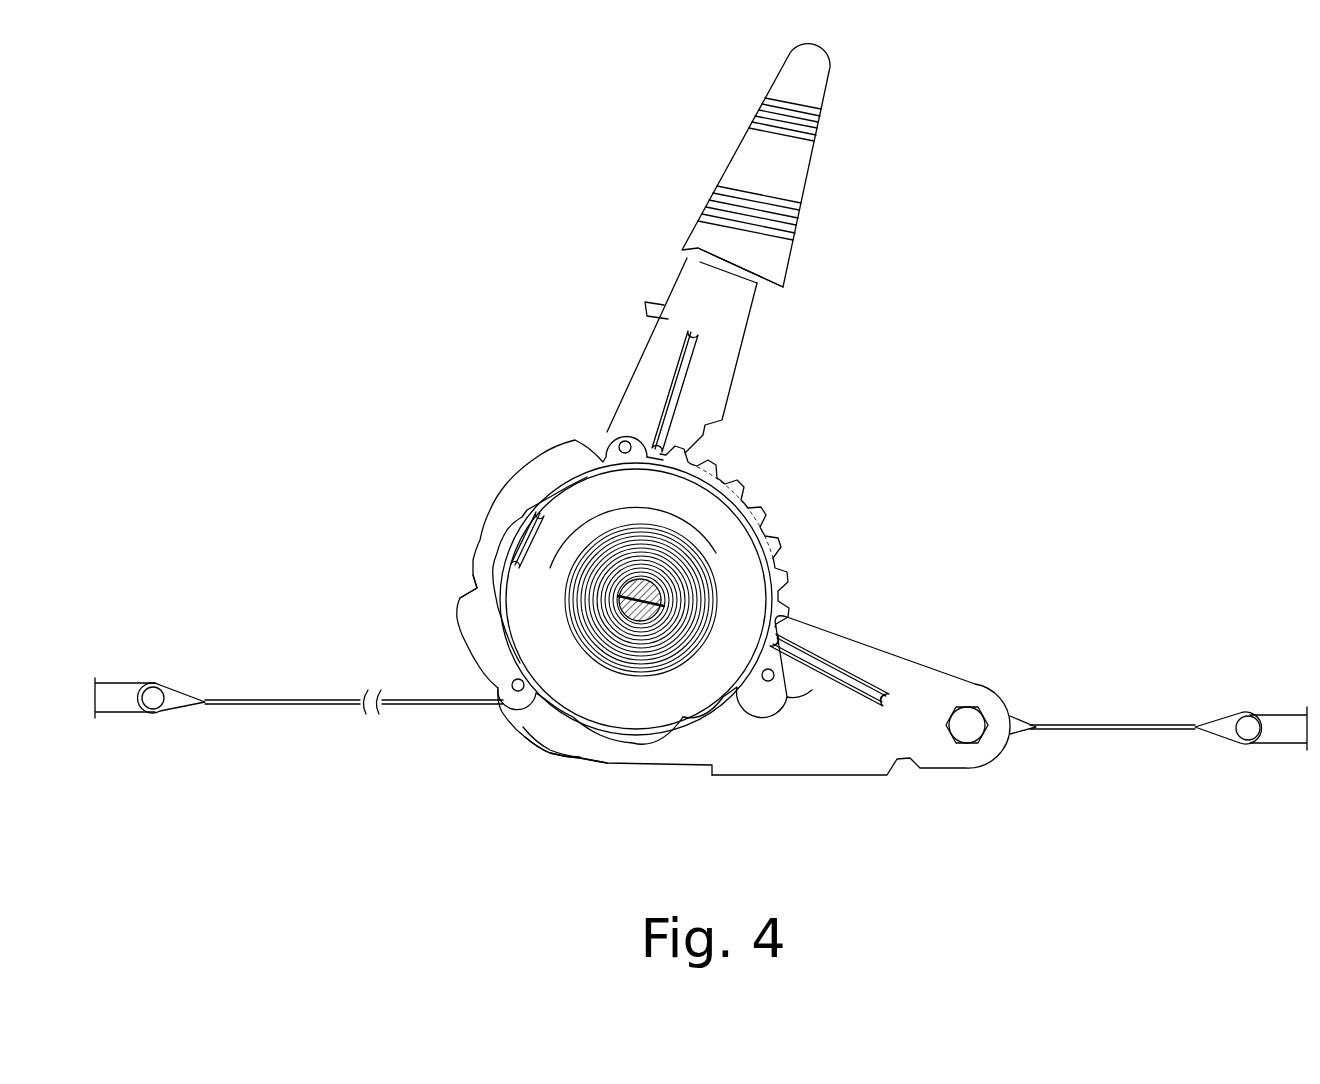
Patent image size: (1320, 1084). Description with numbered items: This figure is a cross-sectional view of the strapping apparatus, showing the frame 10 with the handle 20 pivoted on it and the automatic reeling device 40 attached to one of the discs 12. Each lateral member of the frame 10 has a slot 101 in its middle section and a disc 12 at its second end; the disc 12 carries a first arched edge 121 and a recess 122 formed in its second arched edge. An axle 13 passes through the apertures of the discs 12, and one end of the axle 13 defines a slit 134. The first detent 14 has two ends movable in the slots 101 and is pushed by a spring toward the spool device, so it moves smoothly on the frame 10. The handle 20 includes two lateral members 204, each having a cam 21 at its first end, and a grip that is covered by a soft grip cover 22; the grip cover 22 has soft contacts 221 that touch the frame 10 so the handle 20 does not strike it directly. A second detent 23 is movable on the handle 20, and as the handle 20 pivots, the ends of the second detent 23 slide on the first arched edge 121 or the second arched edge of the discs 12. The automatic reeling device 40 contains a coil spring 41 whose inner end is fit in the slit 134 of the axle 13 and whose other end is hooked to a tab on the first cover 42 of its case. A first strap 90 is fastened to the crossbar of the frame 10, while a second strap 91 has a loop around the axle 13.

The frame 10 is at (915, 798).
The slot 101 is at (811, 673).
The disc 12 is at (617, 747).
The first arched edge 121 is at (757, 513).
The recess 122 is at (470, 586).
The axle 13 is at (620, 594).
The slit 134 is at (662, 600).
The first detent 14 is at (830, 673).
The handle 20 is at (638, 252).
The lateral member 204 is at (742, 293).
The cam 21 is at (550, 753).
The grip cover 22 is at (755, 160).
The soft contact 221 is at (773, 267).
The second detent 23 is at (670, 397).
The automatic reeling device 40 is at (461, 476).
The coil spring 41 is at (660, 648).
The first cover 42 is at (730, 490).
The first strap 90 is at (1173, 727).
The second strap 91 is at (308, 700).